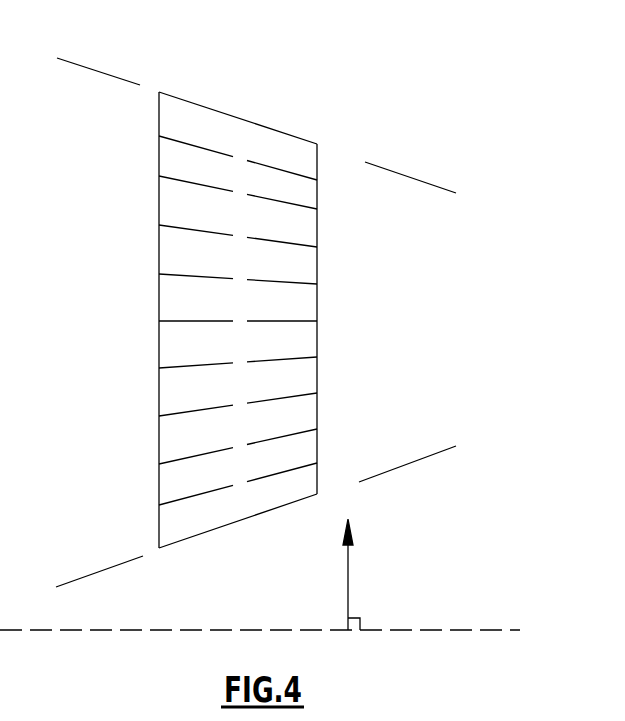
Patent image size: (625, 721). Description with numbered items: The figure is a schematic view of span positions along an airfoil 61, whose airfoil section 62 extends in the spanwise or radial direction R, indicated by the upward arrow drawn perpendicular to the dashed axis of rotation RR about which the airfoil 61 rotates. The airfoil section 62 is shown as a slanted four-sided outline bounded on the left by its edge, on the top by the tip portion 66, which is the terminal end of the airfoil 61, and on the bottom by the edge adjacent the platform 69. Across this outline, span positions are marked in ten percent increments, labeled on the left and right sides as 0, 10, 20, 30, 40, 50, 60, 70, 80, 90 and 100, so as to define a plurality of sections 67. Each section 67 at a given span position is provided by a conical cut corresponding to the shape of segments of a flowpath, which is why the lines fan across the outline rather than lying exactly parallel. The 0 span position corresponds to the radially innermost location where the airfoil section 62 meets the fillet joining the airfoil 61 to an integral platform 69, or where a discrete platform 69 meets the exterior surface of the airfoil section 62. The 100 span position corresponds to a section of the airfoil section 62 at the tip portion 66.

The airfoil 61 is at (126, 50).
The airfoil section 62 is at (274, 320).
The tip portion 66 is at (247, 118).
The sections 67 is at (159, 284).
The platform 69 is at (178, 542).
The radial direction R is at (348, 582).
The axis of rotation RR is at (183, 630).
The 0% span position 0 is at (330, 495).
The 10% span position 10 is at (218, 492).
The 20% span position 20 is at (256, 441).
The 30% span position 30 is at (218, 412).
The 40% span position 40 is at (256, 360).
The 50% span position 50 is at (218, 323).
The 60% span position 60 is at (256, 289).
The 70% span position 70 is at (218, 229).
The 80% span position 80 is at (256, 203).
The 90% span position 90 is at (218, 150).
The 100% span position 100 is at (342, 152).